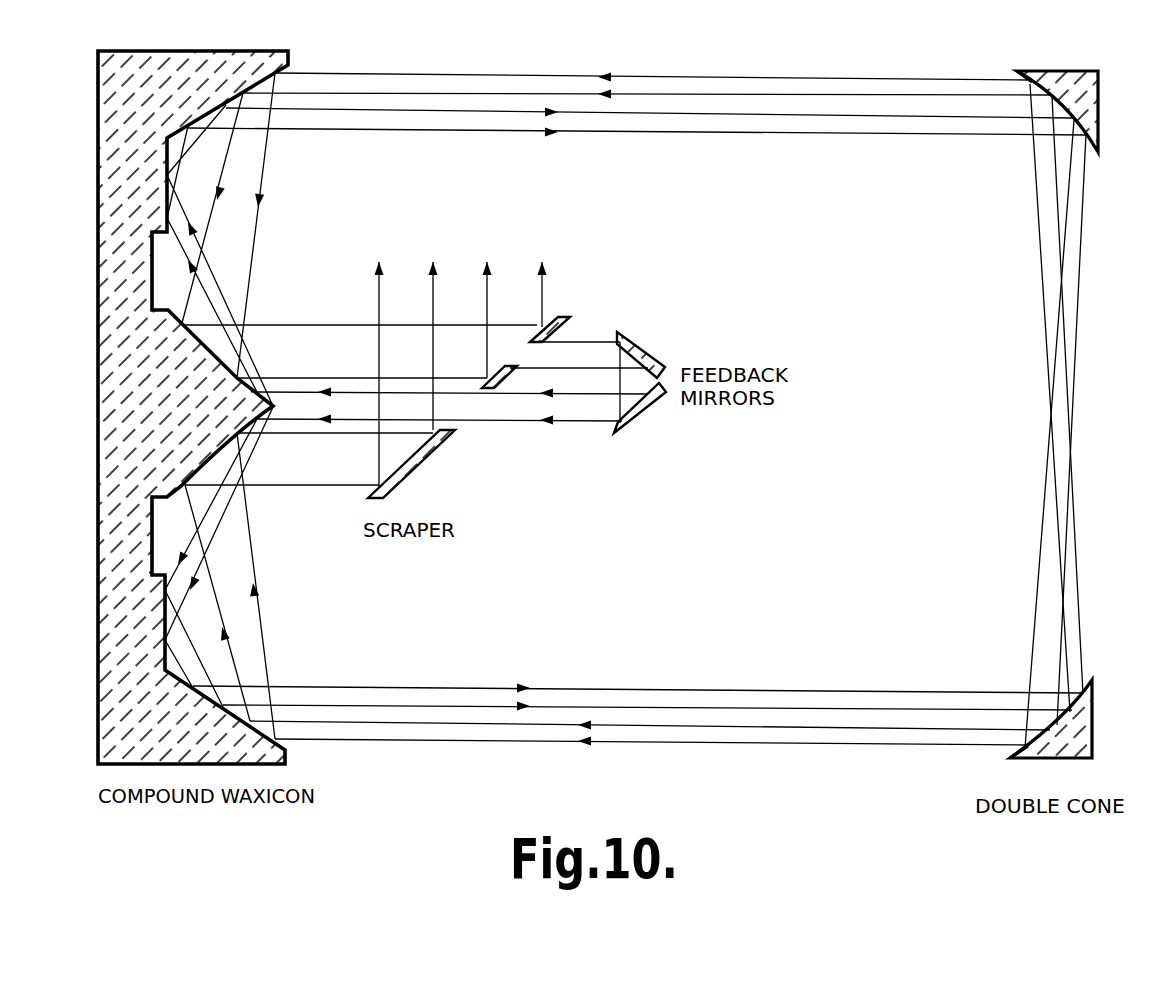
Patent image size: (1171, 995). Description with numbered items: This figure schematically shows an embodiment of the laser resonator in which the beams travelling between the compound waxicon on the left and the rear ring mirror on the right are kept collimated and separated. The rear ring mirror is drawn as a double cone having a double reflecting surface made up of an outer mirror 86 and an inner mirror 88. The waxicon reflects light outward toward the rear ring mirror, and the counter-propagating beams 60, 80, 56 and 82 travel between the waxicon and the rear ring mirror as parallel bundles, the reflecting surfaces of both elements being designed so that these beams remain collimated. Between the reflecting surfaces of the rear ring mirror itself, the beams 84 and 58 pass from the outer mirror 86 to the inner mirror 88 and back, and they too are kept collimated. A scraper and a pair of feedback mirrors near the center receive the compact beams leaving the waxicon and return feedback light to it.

The converging beam 60 is at (740, 95).
The beam 80 is at (832, 132).
The diverging beam 56 is at (737, 707).
The beam 82 is at (797, 743).
The outer mirror 86 is at (1027, 81).
The inner mirror 88 is at (1081, 140).
The beam 84 is at (1071, 208).
The beam 58 is at (1069, 630).